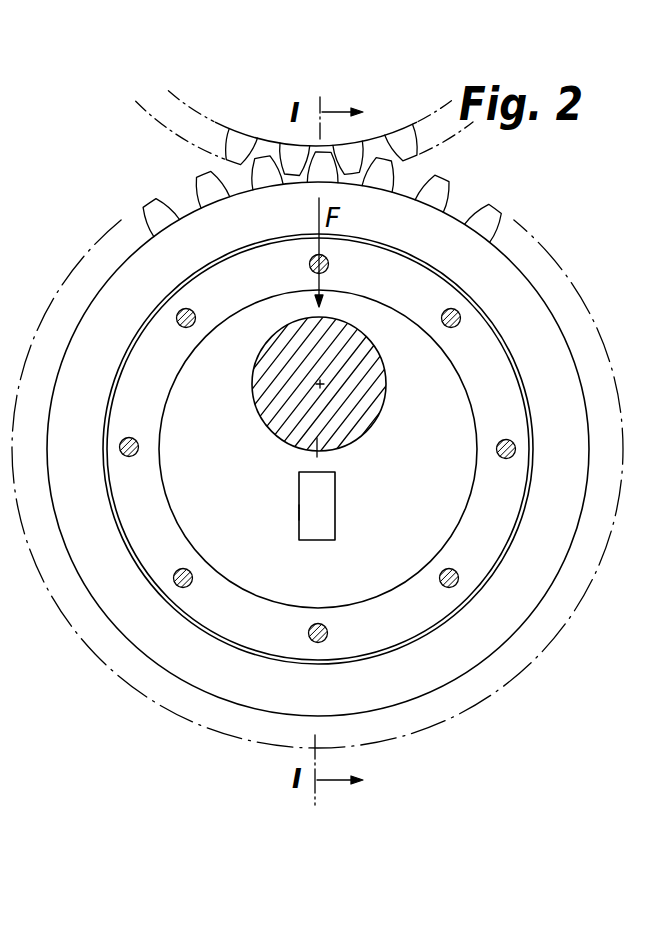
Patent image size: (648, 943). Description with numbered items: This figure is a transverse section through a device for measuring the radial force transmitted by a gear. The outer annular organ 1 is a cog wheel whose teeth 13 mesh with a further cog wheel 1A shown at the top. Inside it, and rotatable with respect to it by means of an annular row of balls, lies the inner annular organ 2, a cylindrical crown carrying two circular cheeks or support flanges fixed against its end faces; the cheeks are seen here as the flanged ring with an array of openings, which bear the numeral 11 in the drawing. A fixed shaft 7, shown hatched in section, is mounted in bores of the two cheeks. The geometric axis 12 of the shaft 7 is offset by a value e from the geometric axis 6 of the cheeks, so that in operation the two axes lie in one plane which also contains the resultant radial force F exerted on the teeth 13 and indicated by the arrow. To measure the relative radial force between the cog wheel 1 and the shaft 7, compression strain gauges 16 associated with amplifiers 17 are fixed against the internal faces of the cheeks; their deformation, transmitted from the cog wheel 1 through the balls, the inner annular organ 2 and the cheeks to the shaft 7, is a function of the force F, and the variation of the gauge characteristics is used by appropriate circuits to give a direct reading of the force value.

The outer annular organ 1 is at (118, 288).
The further cog wheel 1A is at (240, 114).
The inner annular organ 2 is at (138, 540).
The geometric axis of the cheeks 6 is at (318, 451).
The fixed shaft 7 is at (360, 406).
The bolt holes 11 is at (183, 587).
The geometric axis of the shaft 12 is at (322, 384).
The teeth 13 is at (447, 186).
The compression strain gauges 16 is at (330, 509).
The amplifiers 17 is at (289, 513).